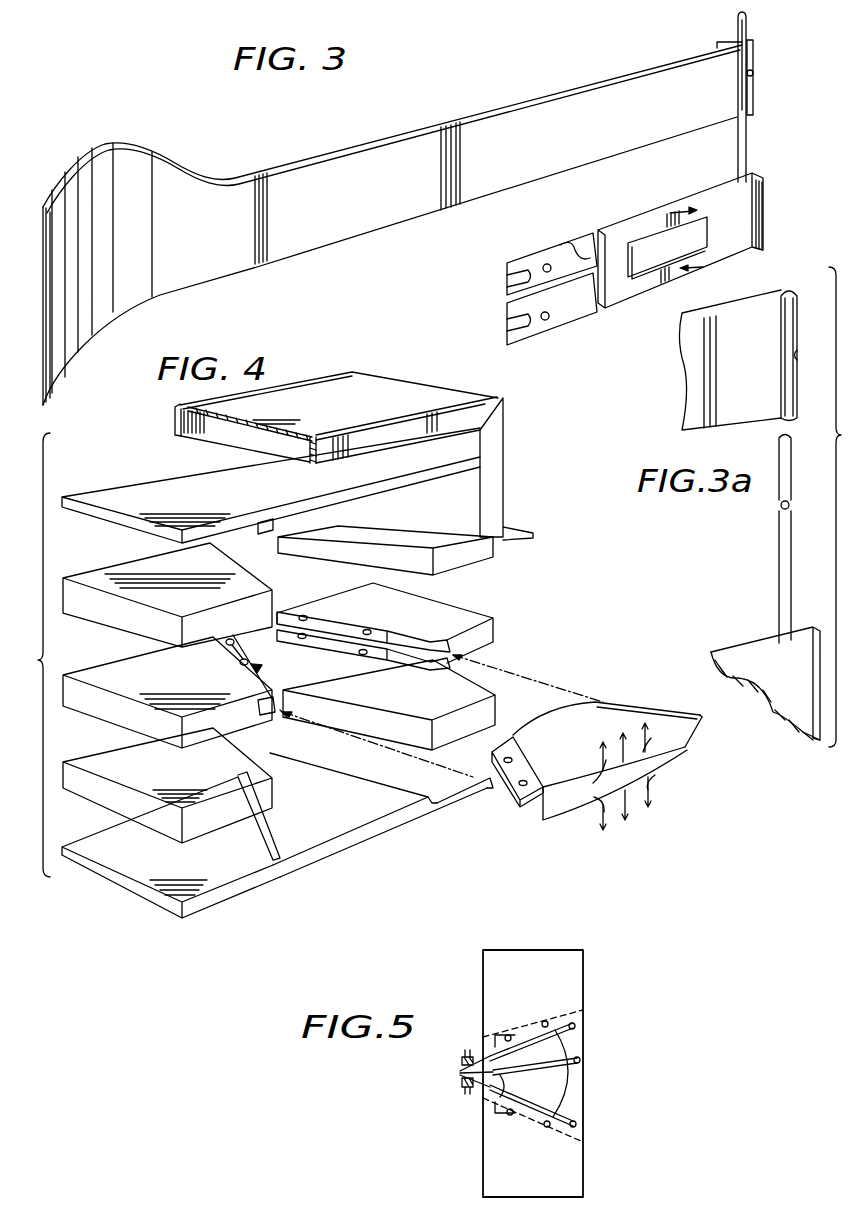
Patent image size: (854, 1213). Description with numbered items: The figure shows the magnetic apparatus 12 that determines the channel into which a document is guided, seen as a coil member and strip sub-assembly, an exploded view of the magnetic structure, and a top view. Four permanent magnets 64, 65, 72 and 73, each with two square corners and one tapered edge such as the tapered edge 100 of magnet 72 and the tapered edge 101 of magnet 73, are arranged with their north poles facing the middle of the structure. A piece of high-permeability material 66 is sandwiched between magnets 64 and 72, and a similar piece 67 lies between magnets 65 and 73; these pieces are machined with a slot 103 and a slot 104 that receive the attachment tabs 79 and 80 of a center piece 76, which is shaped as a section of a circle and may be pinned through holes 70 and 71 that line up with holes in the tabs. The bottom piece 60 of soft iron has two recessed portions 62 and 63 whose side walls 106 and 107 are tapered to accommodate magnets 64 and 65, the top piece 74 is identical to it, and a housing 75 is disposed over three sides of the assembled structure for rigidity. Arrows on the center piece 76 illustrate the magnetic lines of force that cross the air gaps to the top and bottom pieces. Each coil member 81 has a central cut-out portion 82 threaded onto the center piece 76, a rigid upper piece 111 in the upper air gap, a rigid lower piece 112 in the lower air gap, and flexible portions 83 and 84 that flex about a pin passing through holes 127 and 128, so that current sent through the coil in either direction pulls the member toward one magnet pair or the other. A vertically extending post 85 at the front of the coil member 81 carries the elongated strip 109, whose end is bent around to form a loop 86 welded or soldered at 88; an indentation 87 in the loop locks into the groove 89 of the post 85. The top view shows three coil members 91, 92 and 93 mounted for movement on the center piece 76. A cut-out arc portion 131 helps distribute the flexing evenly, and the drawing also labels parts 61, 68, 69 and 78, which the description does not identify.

In FIG. 4, the magnetic apparatus 12 is at (150, 936).
In FIG. 4, the bottom piece 60 is at (284, 840).
In FIG. 4, the base plate arm 61 is at (365, 830).
In FIG. 4, the recessed portion 62 is at (225, 890).
In FIG. 4, the recessed portion 63 is at (460, 798).
In FIG. 4, the permanent magnet 64 is at (107, 800).
In FIG. 4, the permanent magnet 65 is at (497, 708).
In FIG. 4, the high-permeability piece 66 is at (110, 705).
In FIG. 4, the high-permeability piece 67 is at (495, 627).
In FIG. 4, the pole piece 68 is at (307, 695).
In FIG. 4, the spacer bar 69 is at (340, 640).
In FIG. 4, the hole 70 is at (238, 662).
In FIG. 4, the hole 71 is at (367, 628).
In FIG. 4, the permanent magnet 72 is at (108, 617).
In FIG. 4, the permanent magnet 73 is at (485, 560).
In FIG. 4, the top piece 74 is at (133, 483).
In FIG. 4, the housing 75 is at (505, 453).
In FIG. 4, the center piece 76 is at (632, 781).
In FIG. 5, the center piece 76 is at (570, 1086).
In FIG. 4, the vane flange 78 is at (533, 800).
In FIG. 4, the attachment tab 79 is at (703, 718).
In FIG. 4, the attachment tab 80 is at (525, 784).
In FIG. 3, the coil member 81 is at (763, 231).
In FIG. 3a, the coil member 81 is at (795, 702).
In FIG. 3, the central cut-out portion 82 is at (645, 279).
In FIG. 3, the flexible portion 83 is at (534, 262).
In FIG. 3, the flexible portion 84 is at (528, 326).
In FIG. 3, the post 85 is at (737, 150).
In FIG. 3a, the post 85 is at (779, 600).
In FIG. 3, the loop 86 is at (753, 55).
In FIG. 3a, the loop 86 is at (796, 330).
In FIG. 3, the indentation 87 is at (754, 73).
In FIG. 3a, the indentation 87 is at (792, 357).
In FIG. 3, the weld point 88 is at (727, 68).
In FIG. 3a, the weld point 88 is at (759, 305).
In FIG. 3a, the groove 89 is at (777, 508).
In FIG. 5, the coil member 91 is at (575, 1025).
In FIG. 5, the coil member 92 is at (580, 1060).
In FIG. 5, the coil member 93 is at (577, 1125).
In FIG. 4, the tapered edge 100 is at (232, 558).
In FIG. 4, the tapered edge 101 is at (348, 558).
In FIG. 4, the slot 103 is at (268, 715).
In FIG. 4, the slot 104 is at (280, 640).
In FIG. 4, the tapered side wall 106 is at (278, 858).
In FIG. 4, the tapered side wall 107 is at (428, 800).
In FIG. 3, the elongated strip 109 is at (343, 143).
In FIG. 3, the upper piece 111 is at (648, 225).
In FIG. 3, the lower piece 112 is at (682, 276).
In FIG. 3, the hole 127 is at (535, 287).
In FIG. 3, the hole 128 is at (540, 322).
In FIG. 3, the cut-out arc portion 131 is at (598, 232).